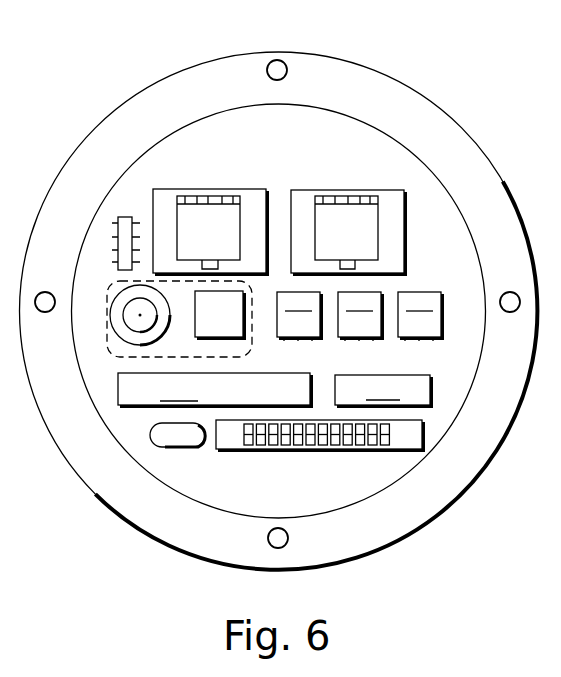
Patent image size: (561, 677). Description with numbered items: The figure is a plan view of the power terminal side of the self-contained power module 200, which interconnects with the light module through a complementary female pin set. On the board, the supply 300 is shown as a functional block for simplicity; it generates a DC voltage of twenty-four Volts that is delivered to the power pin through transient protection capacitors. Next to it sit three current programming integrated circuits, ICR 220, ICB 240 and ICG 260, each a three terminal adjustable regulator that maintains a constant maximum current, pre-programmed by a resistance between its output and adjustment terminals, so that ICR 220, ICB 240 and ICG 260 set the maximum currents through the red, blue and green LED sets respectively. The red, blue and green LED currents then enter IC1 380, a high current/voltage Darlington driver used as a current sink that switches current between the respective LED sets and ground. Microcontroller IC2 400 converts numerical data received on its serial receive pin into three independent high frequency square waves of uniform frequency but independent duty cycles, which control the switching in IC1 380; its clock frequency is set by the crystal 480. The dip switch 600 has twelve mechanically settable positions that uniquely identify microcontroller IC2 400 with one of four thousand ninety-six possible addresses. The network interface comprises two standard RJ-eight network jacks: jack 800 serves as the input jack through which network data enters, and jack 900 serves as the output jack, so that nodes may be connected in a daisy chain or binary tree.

The power module 200 is at (378, 78).
The input jack 800 is at (210, 232).
The output jack 900 is at (348, 232).
The supply 300 is at (179, 320).
The current programming integrated circuit ICR 220 is at (299, 316).
The current programming integrated circuit ICB 240 is at (360, 316).
The current programming integrated circuit ICG 260 is at (420, 316).
The microcontroller IC2 400 is at (249, 373).
The Darlington driver IC1 380 is at (403, 374).
The crystal 480 is at (177, 435).
The dip switch 600 is at (343, 450).